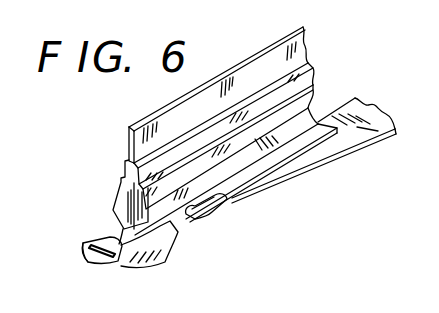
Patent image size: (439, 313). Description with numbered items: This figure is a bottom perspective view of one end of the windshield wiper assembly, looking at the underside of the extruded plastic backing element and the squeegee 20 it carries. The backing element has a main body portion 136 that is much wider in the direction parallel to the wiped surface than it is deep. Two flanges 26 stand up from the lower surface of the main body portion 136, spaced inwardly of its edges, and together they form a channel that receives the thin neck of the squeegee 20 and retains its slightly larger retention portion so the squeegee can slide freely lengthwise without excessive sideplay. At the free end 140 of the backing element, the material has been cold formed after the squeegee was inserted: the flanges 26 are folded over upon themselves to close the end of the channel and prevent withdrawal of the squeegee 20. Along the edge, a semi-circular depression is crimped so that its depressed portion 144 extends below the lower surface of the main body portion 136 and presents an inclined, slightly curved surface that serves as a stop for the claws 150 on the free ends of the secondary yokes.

The squeegee 20 is at (172, 102).
The flanges 26 is at (93, 243).
The main body portion 136 is at (312, 167).
The free ends 140 is at (92, 262).
The depressed portion 144 is at (160, 231).
The claws 150 is at (213, 217).